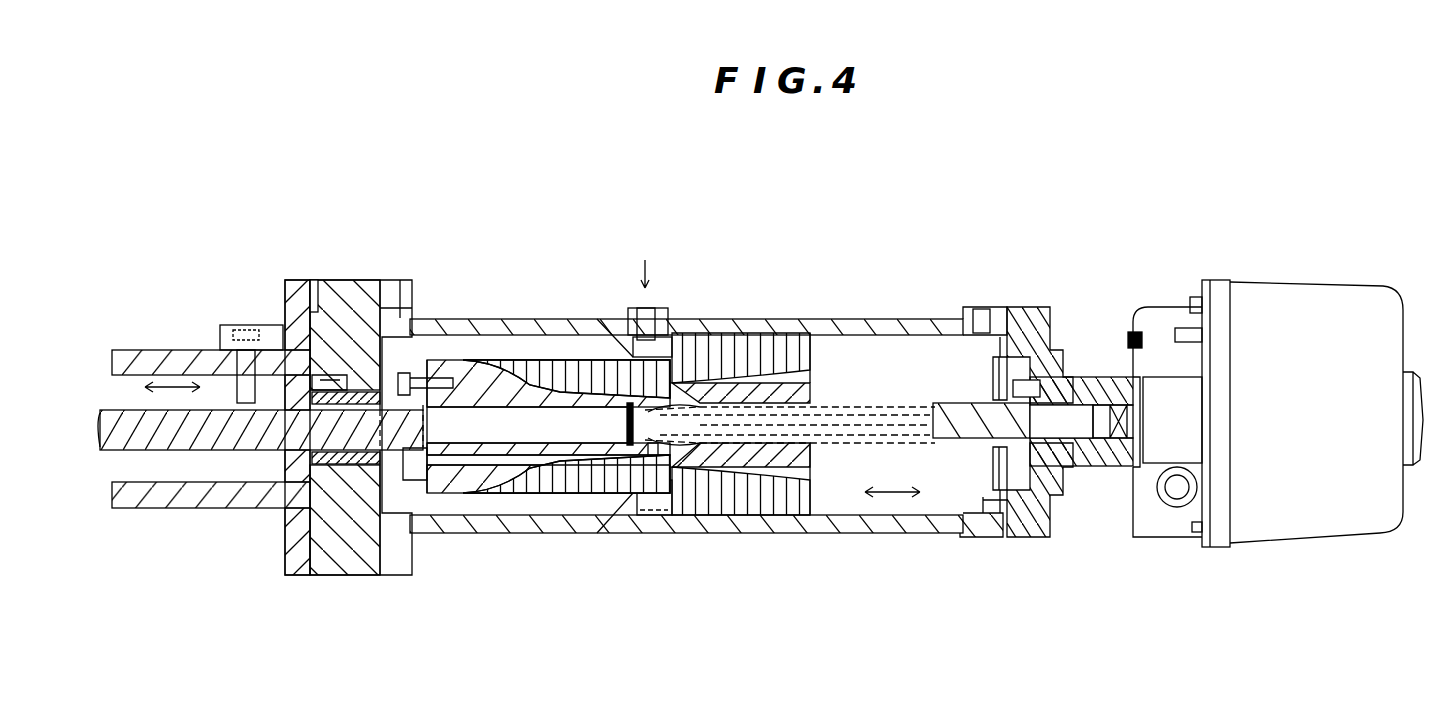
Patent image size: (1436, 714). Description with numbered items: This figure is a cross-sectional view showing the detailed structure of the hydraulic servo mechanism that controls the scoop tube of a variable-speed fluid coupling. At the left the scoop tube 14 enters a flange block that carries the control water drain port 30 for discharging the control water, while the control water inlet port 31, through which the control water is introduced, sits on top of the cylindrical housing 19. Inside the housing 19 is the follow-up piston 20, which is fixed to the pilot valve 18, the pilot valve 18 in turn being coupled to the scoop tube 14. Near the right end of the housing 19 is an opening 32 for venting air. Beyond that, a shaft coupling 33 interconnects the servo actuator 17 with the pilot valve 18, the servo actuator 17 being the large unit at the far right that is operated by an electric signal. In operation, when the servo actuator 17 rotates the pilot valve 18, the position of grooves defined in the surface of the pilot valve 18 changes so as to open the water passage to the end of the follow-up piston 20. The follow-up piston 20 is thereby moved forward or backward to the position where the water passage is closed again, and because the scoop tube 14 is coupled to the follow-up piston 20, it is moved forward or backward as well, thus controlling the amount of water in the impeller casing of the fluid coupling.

The scoop tube 14 is at (213, 450).
The servo actuator 17 is at (1325, 538).
The pilot valve 18 is at (842, 400).
The housing 19 is at (890, 319).
The follow-up piston 20 is at (742, 333).
The control water drain port 30 is at (387, 280).
The control water inlet port 31 is at (643, 308).
The opening for venting air 32 is at (983, 307).
The shaft coupling 33 is at (1105, 377).